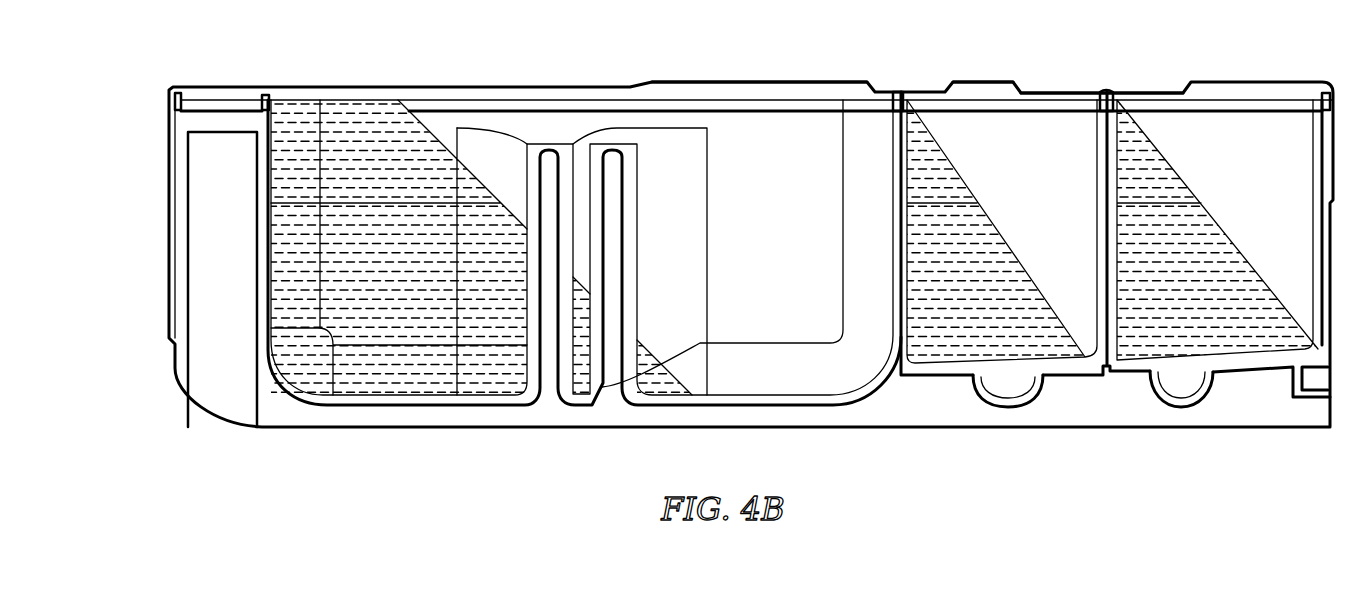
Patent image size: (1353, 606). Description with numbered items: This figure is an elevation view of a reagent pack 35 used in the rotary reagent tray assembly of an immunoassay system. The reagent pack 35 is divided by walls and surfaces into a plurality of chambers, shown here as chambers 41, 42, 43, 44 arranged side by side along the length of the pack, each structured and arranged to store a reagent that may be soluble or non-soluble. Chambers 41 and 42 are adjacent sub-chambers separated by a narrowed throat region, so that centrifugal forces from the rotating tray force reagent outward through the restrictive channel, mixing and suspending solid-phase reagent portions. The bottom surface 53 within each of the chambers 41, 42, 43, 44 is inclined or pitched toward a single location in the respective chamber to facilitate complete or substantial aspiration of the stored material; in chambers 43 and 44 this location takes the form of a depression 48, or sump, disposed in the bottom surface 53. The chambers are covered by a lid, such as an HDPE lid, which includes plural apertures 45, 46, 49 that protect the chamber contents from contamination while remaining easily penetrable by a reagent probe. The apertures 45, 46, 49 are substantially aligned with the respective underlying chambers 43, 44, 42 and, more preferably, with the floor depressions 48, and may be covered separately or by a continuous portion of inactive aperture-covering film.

The reagent pack 35 is at (352, 56).
The chamber 41 is at (375, 270).
The chamber 42 is at (762, 209).
The chamber 43 is at (1022, 209).
The chamber 44 is at (1245, 209).
The aperture 45 is at (987, 92).
The aperture 46 is at (1160, 93).
The depression 48 is at (1033, 392).
The aperture 49 is at (790, 84).
The bottom surface 53 is at (682, 407).